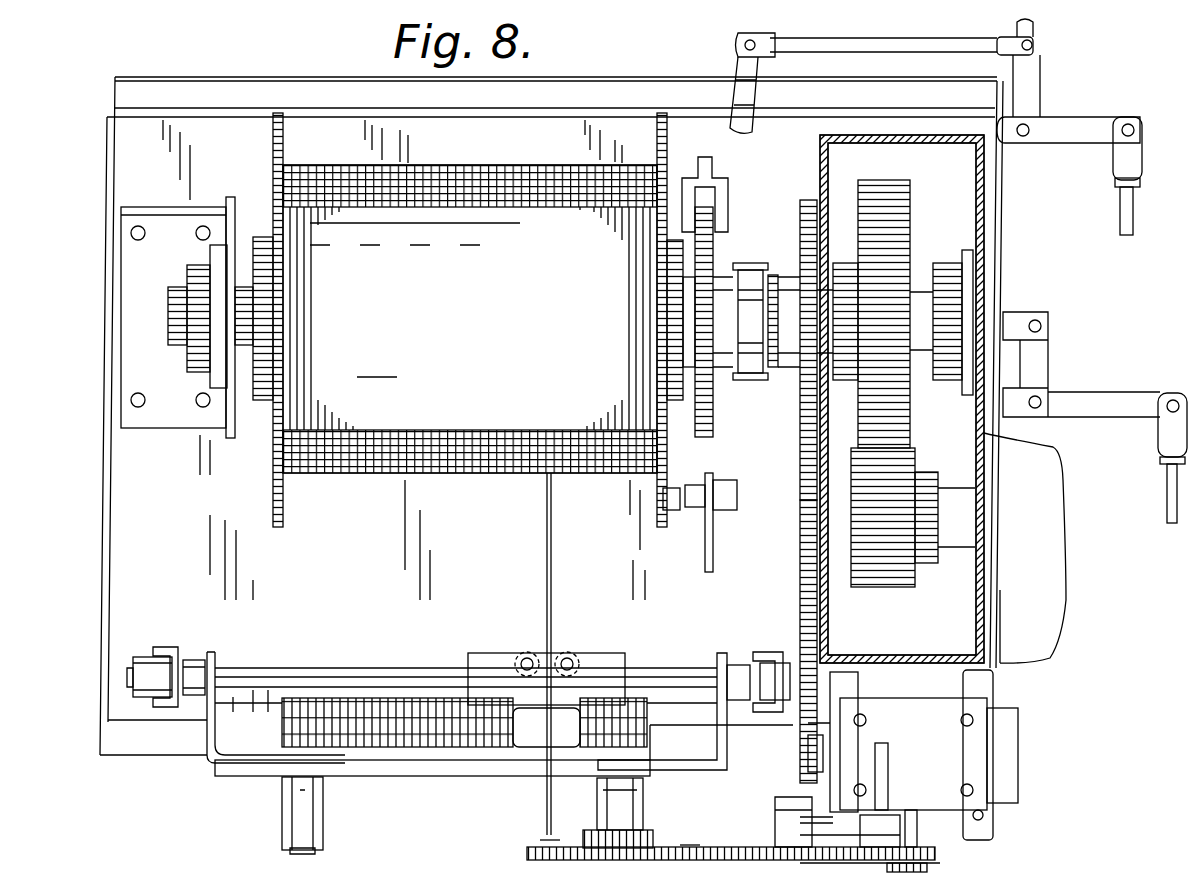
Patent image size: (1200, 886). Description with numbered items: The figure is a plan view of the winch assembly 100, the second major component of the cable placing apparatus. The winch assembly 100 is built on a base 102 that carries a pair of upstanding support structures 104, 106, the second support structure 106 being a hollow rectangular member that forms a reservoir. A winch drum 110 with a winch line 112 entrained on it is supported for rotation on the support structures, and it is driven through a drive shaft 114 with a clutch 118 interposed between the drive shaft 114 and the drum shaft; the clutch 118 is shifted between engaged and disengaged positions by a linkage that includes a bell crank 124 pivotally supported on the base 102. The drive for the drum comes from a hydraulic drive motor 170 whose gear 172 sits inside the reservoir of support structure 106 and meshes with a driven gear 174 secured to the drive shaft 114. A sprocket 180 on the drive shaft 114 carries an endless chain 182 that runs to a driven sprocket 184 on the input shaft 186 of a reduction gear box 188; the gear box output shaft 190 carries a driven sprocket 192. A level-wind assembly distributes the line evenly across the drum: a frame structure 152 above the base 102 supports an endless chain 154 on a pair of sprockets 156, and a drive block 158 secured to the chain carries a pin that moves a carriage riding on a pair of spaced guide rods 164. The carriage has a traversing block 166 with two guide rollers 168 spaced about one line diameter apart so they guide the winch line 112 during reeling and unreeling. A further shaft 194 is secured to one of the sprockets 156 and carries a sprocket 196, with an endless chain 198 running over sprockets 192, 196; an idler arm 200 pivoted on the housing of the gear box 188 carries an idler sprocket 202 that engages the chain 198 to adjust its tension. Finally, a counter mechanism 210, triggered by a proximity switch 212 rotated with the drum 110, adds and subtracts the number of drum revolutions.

The winch assembly 100 is at (140, 155).
The base 102 is at (200, 600).
The support structure 104 is at (148, 257).
The support structure 106 is at (820, 153).
The winch drum 110 is at (270, 493).
The winch line 112 is at (545, 573).
The drive shaft 114 is at (788, 293).
The clutch 118 is at (748, 380).
The bell crank 124 is at (1093, 405).
The frame structure 152 is at (207, 763).
The endless chain 154 is at (415, 700).
The sprockets 156 is at (297, 702).
The drive block 158 is at (528, 735).
The guide rods 164 is at (365, 670).
The traversing block 166 is at (482, 660).
The guide rollers 168 is at (563, 655).
The hydraulic drive motor 170 is at (1047, 618).
The gear 172 is at (890, 580).
The driven gear 174 is at (905, 205).
The sprocket 180 is at (793, 372).
The endless chain 182 is at (795, 575).
The driven sprocket 184 is at (810, 755).
The input shaft 186 is at (830, 750).
The reduction gear box 188 is at (980, 745).
The output shaft 190 is at (910, 838).
The driven sprocket 192 is at (927, 867).
The shaft 194 is at (600, 862).
The sprocket 196 is at (547, 845).
The endless chain 198 is at (688, 848).
The idler arm 200 is at (830, 822).
The idler sprocket 202 is at (775, 845).
The counter mechanism 210 is at (727, 512).
The proximity switch 212 is at (672, 510).